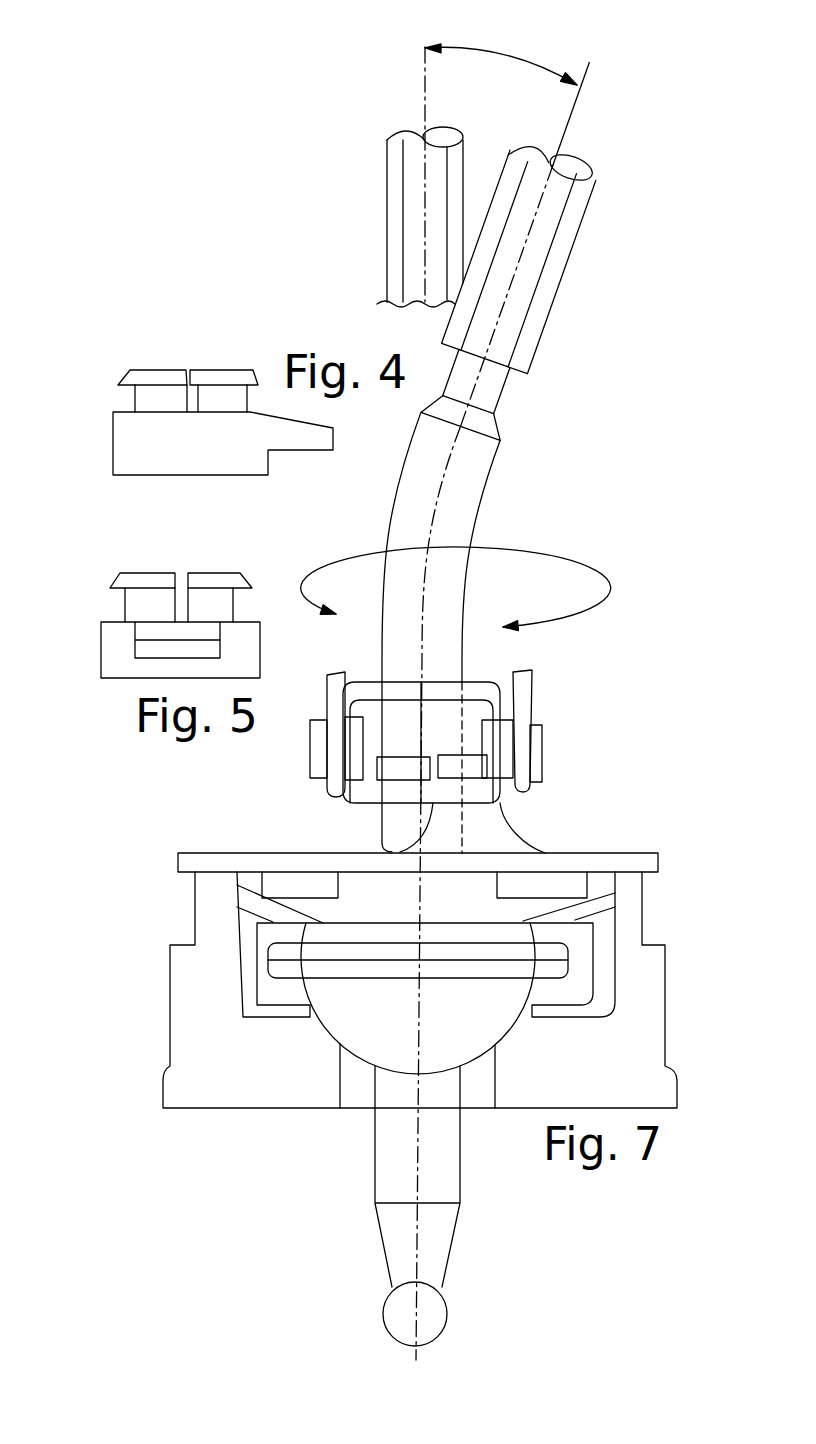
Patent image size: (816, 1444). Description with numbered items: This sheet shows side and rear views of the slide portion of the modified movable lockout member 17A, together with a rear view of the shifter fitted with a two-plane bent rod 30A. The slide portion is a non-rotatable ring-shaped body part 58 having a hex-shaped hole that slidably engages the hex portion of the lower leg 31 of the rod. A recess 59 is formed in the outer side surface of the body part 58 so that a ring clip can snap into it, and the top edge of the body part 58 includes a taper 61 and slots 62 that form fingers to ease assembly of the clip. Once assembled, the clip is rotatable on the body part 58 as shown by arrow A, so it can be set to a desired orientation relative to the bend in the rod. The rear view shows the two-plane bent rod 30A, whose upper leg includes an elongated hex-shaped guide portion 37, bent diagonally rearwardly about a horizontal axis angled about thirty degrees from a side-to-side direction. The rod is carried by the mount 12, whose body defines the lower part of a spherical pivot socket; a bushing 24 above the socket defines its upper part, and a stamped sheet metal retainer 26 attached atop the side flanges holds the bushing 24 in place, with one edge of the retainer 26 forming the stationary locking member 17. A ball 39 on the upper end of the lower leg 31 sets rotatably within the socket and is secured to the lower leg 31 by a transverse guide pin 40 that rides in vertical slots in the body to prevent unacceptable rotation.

In FIG. 7, the mount 12 is at (665, 997).
In FIG. 7, the stationary locking member 17 is at (523, 822).
In FIG. 7, the modified movable lockout member 17A is at (556, 752).
In FIG. 7, the bushing 24 is at (323, 897).
In FIG. 7, the retainer 26 is at (327, 850).
In FIG. 7, the two-plane bent rod 30A is at (477, 482).
In FIG. 7, the lower leg 31 is at (460, 1173).
In FIG. 7, the elongated hex-shaped guide portion 37 is at (387, 195).
In FIG. 7, the ball 39 is at (368, 1052).
In FIG. 7, the transverse guide pin 40 is at (358, 990).
In FIG. 4, the ring-shaped body part 58 is at (192, 405).
In FIG. 5, the ring-shaped body part 58 is at (153, 641).
In FIG. 4, the recess 59 is at (122, 400).
In FIG. 5, the recess 59 is at (117, 608).
In FIG. 4, the taper 61 is at (122, 368).
In FIG. 5, the taper 61 is at (112, 585).
In FIG. 4, the slots 62 is at (190, 372).
In FIG. 5, the slots 62 is at (182, 575).
In FIG. 7, the arrow A is at (612, 588).